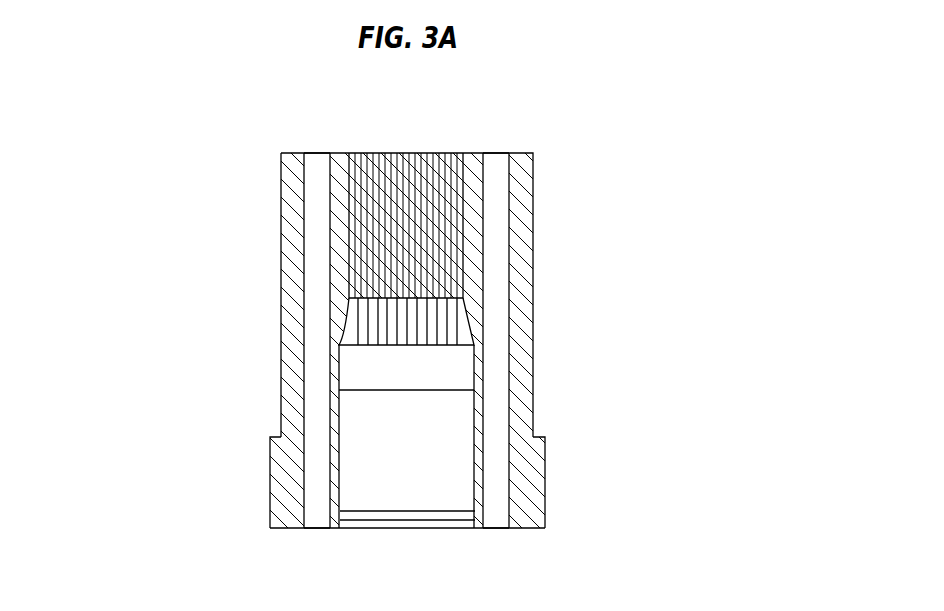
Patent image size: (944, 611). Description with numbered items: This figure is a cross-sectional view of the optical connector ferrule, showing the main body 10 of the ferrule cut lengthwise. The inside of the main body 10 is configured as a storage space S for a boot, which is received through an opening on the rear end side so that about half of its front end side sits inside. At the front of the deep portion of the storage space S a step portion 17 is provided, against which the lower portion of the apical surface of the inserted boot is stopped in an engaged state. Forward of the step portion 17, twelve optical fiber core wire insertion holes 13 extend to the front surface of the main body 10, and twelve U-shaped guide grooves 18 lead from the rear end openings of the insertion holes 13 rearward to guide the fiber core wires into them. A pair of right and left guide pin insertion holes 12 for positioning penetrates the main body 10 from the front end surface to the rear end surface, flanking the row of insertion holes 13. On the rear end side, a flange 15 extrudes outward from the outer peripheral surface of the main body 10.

The main body of the ferrule 10 is at (268, 183).
The guide pin insertion holes 12 is at (317, 177).
The optical fiber core wire insertion holes 13 is at (402, 153).
The flange 15 is at (270, 438).
The step portion 17 is at (407, 390).
The U-shaped guide grooves 18 is at (392, 332).
The storage space S is at (388, 473).